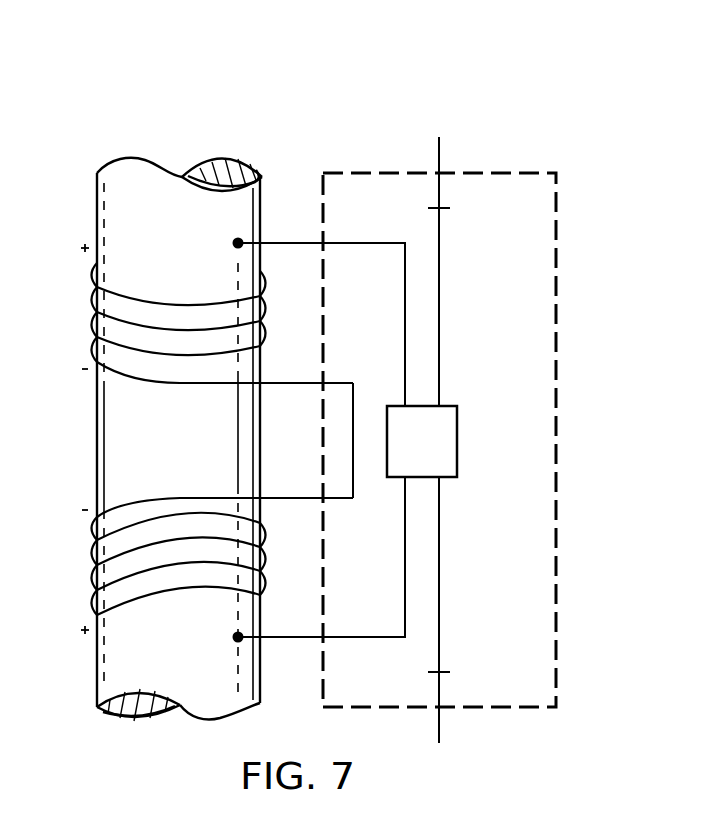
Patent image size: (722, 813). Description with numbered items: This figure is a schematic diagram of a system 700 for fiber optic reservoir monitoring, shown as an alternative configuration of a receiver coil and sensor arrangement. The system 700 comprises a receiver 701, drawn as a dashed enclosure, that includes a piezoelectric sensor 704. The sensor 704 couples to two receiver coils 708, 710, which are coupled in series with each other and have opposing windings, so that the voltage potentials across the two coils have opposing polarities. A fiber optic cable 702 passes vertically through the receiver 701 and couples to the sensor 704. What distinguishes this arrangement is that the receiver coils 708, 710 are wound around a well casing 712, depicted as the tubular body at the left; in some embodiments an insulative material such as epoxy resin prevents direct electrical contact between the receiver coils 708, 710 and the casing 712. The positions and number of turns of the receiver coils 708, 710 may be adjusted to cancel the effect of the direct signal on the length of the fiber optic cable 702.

The system 700 is at (434, 56).
The receiver 701 is at (560, 342).
The fiber optic cable 702 is at (439, 153).
The piezoelectric sensor 704 is at (458, 440).
The receiver coil 708 is at (92, 270).
The receiver coil 710 is at (93, 607).
The well casing 712 is at (97, 443).